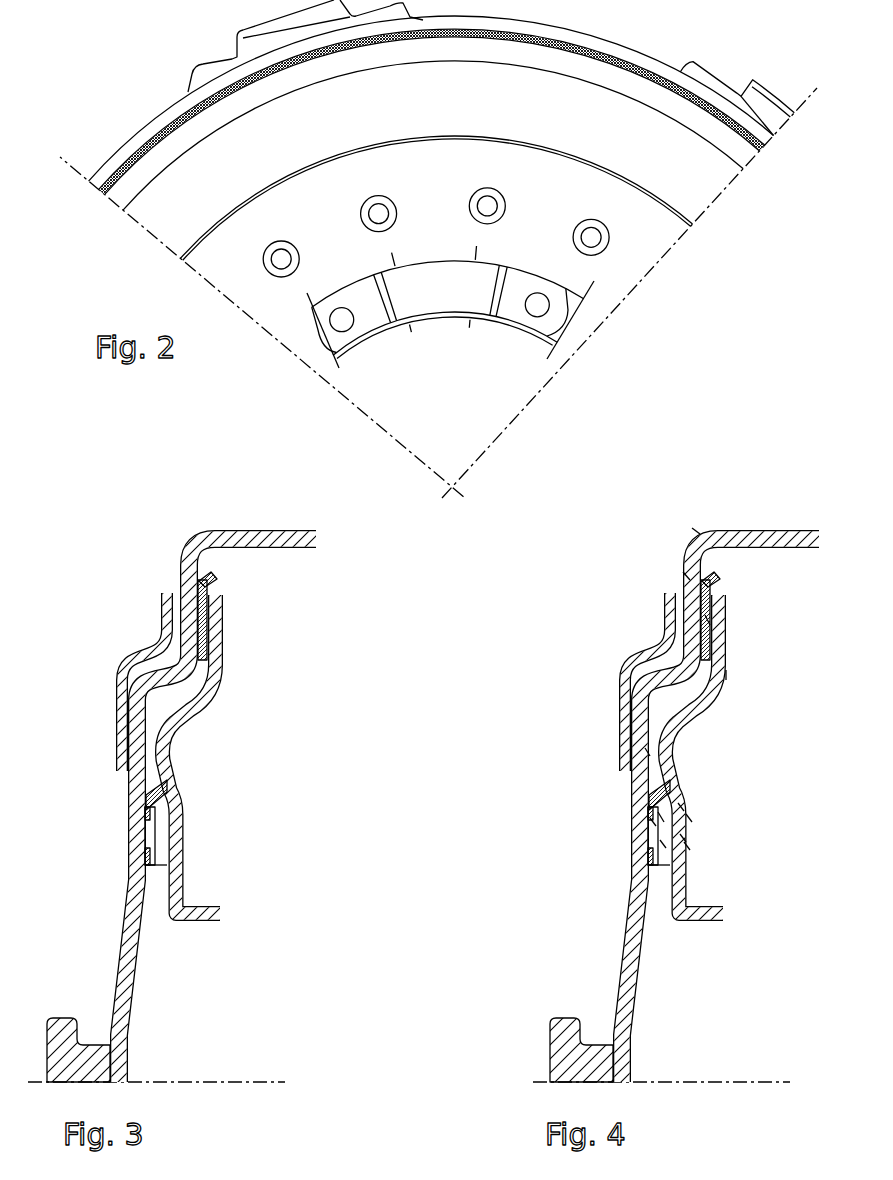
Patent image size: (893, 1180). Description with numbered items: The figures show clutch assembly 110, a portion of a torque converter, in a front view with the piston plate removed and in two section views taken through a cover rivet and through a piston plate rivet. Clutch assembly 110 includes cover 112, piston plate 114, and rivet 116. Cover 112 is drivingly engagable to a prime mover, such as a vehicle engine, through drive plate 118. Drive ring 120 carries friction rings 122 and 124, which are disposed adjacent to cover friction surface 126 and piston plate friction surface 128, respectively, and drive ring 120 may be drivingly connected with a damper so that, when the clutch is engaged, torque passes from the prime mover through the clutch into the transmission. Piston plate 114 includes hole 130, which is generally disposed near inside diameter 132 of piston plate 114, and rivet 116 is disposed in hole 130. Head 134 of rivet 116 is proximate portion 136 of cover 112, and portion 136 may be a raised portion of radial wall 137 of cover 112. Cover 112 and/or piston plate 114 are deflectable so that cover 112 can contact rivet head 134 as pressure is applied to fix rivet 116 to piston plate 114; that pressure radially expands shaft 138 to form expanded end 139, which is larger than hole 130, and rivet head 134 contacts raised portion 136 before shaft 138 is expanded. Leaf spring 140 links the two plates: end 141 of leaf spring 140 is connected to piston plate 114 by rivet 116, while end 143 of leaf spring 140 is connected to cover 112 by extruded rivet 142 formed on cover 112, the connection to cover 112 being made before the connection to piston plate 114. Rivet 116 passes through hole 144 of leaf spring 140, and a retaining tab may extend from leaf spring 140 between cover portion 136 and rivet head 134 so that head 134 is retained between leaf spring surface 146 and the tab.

In FIG. 2, the clutch assembly 110 is at (668, 45).
In FIG. 4, the clutch assembly 110 is at (692, 521).
In FIG. 3, the cover 112 is at (142, 898).
In FIG. 4, the cover 112 is at (738, 536).
In FIG. 4, the piston plate 114 is at (673, 737).
In FIG. 4, the rivet 116 is at (684, 838).
In FIG. 4, the drive plate 118 is at (624, 712).
In FIG. 4, the drive ring 120 is at (722, 580).
In FIG. 4, the friction ring 122 is at (702, 619).
In FIG. 4, the friction ring 124 is at (722, 621).
In FIG. 4, the cover friction surface 126 is at (685, 577).
In FIG. 4, the piston plate friction surface 128 is at (731, 673).
In FIG. 4, the hole 130 is at (690, 817).
In FIG. 4, the inside diameter 132 is at (700, 927).
In FIG. 4, the rivet head 134 is at (653, 823).
In FIG. 4, the portion 136 is at (664, 846).
In FIG. 2, the radial wall 137 is at (372, 377).
In FIG. 3, the radial wall 137 is at (150, 767).
In FIG. 4, the shaft 138 is at (683, 806).
In FIG. 4, the expanded end 139 is at (688, 846).
In FIG. 2, the leaf spring 140 is at (427, 302).
In FIG. 3, the leaf spring 140 is at (158, 808).
In FIG. 4, the leaf spring 140 is at (625, 771).
In FIG. 2, the end 141 is at (532, 283).
In FIG. 2, the extruded rivet 142 is at (335, 320).
In FIG. 3, the extruded rivet 142 is at (143, 837).
In FIG. 4, the extruded rivet 142 is at (659, 836).
In FIG. 2, the end 143 is at (337, 302).
In FIG. 4, the hole 144 is at (662, 818).
In FIG. 4, the leaf spring surface 146 is at (650, 752).